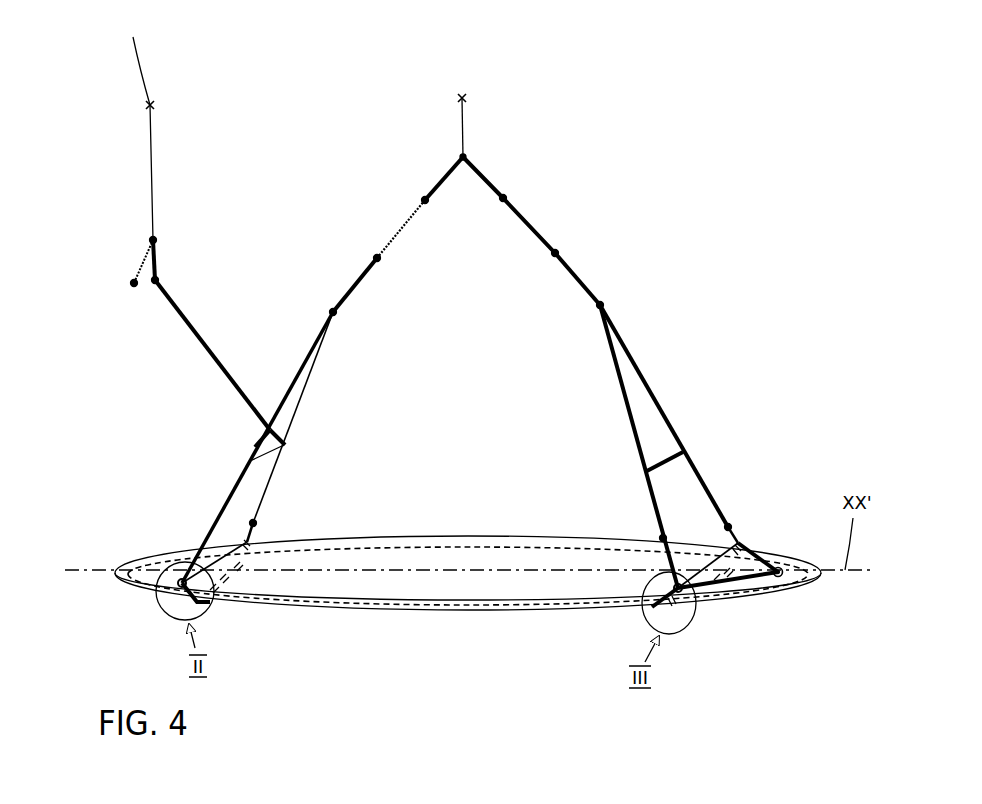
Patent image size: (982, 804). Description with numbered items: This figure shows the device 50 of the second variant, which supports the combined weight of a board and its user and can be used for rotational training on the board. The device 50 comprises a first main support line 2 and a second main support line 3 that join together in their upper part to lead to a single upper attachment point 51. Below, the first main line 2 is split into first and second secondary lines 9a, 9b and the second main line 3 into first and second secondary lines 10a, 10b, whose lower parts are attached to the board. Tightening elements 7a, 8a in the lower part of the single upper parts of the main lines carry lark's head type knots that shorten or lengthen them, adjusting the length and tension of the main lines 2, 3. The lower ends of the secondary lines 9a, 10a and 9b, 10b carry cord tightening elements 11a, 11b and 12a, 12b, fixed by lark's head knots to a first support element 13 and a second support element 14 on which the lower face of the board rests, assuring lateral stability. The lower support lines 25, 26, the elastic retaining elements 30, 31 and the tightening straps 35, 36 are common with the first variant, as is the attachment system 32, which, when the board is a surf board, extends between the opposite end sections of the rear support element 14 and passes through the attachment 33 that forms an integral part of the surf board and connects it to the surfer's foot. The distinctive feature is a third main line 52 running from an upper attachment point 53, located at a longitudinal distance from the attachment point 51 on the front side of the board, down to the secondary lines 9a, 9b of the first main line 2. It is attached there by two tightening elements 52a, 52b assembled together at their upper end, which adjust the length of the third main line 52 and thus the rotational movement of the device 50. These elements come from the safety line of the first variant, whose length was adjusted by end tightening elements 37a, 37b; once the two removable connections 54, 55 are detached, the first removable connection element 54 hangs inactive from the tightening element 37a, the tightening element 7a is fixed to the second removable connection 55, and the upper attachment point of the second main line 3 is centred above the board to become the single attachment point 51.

The first main support line 2 is at (336, 246).
The second main support line 3 is at (580, 248).
The tightening element 7a is at (352, 287).
The tightening element 8a is at (583, 280).
The first secondary line 9a is at (233, 483).
The second secondary line 9b is at (303, 387).
The first secondary line 10a is at (630, 432).
The second secondary line 10b is at (660, 403).
The tightening element 11a is at (178, 578).
The tightening element 11b is at (257, 525).
The tightening element 12a is at (660, 540).
The tightening element 12b is at (738, 532).
The first support element 13 is at (230, 578).
The second support element 14 is at (733, 580).
The lower support line 25 is at (458, 610).
The lower support line 26 is at (445, 547).
The elastic retaining element 30 is at (220, 555).
The elastic retaining element 31 is at (707, 567).
The attachment system 32 is at (787, 548).
The attachment 33 is at (787, 577).
The tightening strap 35 is at (252, 457).
The tightening strap 36 is at (668, 455).
The tightening element 37a is at (158, 260).
The tightening element 37b is at (442, 177).
The device 50 is at (595, 182).
The single upper attachment point 51 is at (470, 96).
The third main line 52 is at (121, 168).
The tightening element 52a is at (277, 452).
The tightening element 52b is at (278, 432).
The upper attachment point 53 is at (136, 128).
The first removable connection element 54 is at (142, 258).
The second removable connection 55 is at (402, 228).